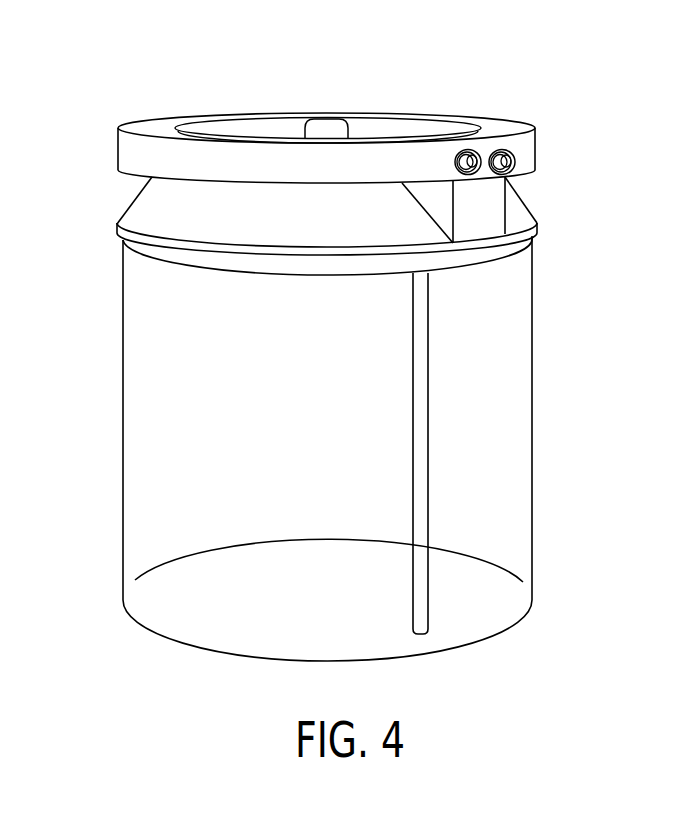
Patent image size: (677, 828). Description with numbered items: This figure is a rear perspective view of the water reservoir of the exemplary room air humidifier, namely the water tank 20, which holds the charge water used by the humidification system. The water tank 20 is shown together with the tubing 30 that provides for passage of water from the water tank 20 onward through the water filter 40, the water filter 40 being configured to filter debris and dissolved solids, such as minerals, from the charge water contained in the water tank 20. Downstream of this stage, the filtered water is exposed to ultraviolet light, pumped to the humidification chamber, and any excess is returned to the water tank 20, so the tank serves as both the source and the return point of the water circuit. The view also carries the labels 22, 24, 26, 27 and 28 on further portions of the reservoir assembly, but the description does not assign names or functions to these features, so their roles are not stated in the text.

The water tank 20 is at (589, 342).
The container body 22 is at (518, 562).
The lid assembly 24 is at (547, 123).
The first port 26 is at (472, 150).
The lid ring sidewall 27 is at (361, 168).
The second port 28 is at (507, 150).
The tubing 30 is at (428, 457).
The water filter 40 is at (248, 138).